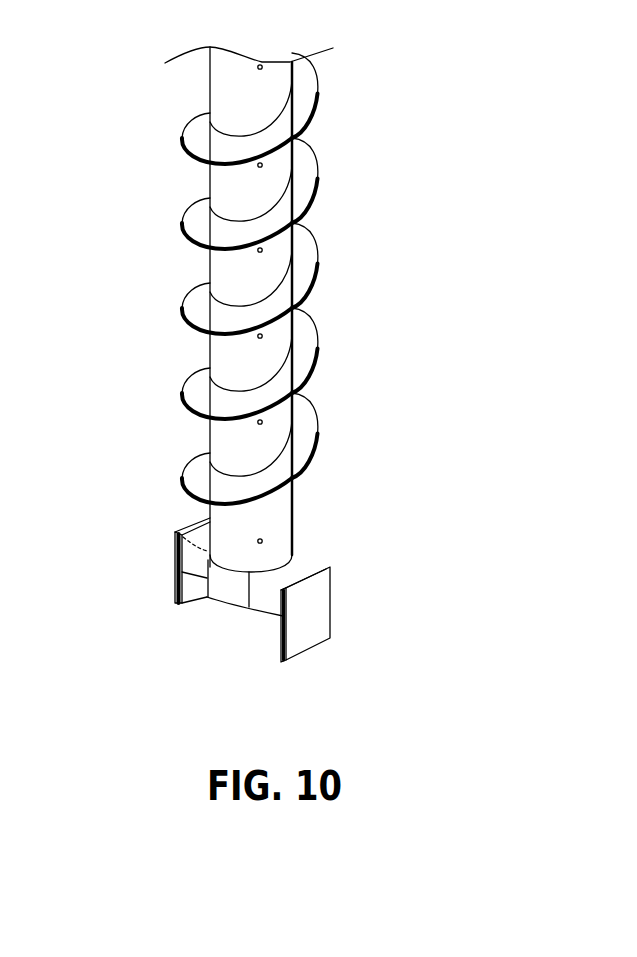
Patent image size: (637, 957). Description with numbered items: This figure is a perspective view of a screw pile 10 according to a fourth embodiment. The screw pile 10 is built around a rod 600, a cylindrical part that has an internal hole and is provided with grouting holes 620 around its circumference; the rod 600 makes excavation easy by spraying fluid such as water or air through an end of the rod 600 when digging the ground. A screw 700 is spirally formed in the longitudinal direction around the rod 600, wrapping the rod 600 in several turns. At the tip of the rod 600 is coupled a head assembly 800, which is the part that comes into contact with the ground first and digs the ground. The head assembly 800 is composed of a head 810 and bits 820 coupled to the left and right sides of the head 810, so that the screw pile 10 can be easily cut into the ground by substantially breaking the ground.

The screw pile 10 is at (352, 170).
The rod 600 is at (228, 88).
The grouting holes 620 is at (250, 340).
The screw 700 is at (255, 278).
The head assembly 800 is at (362, 575).
The head 810 is at (220, 590).
The bits 820 is at (175, 578).